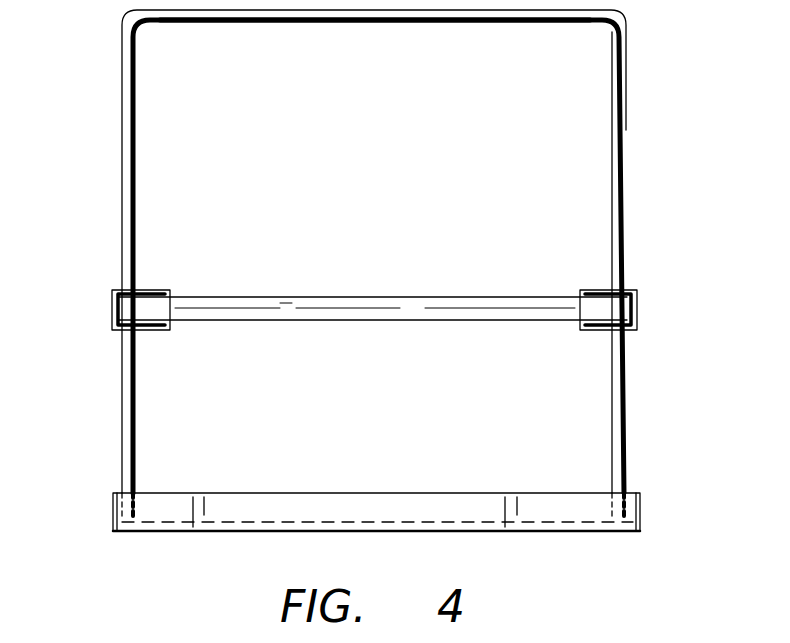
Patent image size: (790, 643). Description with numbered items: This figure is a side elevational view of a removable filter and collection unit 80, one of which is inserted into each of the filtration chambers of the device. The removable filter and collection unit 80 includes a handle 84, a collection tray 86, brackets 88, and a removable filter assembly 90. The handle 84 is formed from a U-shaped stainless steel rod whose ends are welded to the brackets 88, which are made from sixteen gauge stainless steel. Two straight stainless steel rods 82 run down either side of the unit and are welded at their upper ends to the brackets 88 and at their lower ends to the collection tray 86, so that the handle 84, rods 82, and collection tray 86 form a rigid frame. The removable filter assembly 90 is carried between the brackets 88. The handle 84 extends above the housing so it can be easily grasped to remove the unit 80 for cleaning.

The removable filter and collection unit 80 is at (655, 149).
The straight stainless steel rods 82 is at (628, 412).
The handle 84 is at (586, 12).
The collection tray 86 is at (643, 505).
The bracket 88 is at (112, 310).
The removable filter assembly 90 is at (323, 296).